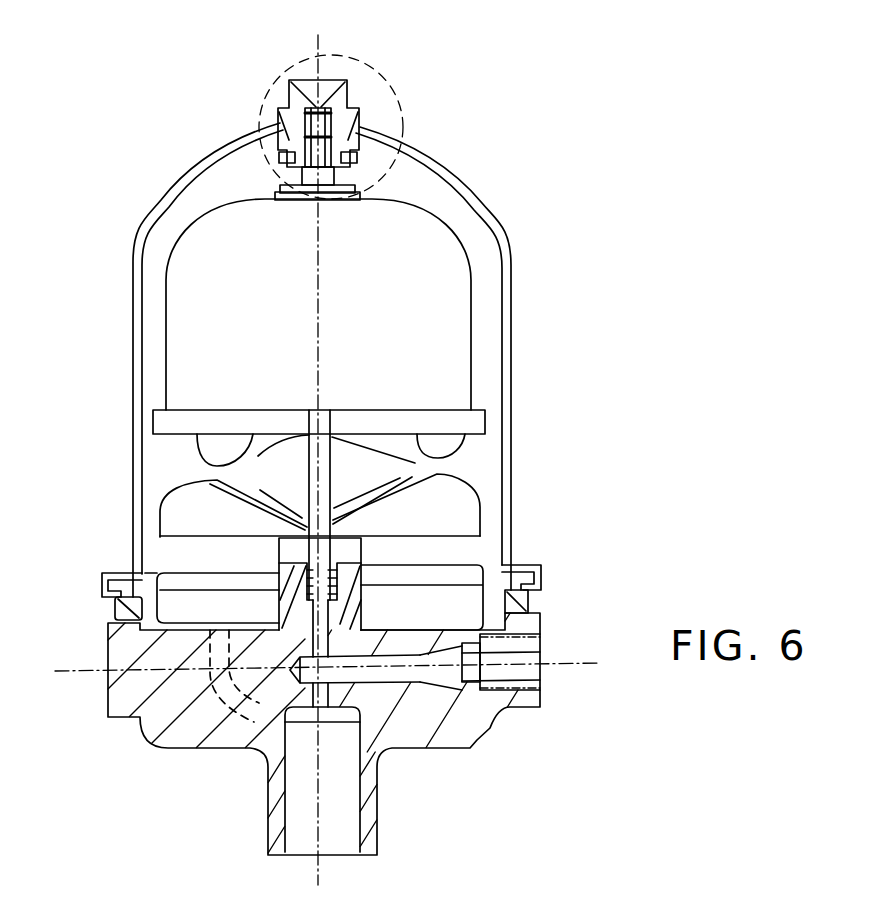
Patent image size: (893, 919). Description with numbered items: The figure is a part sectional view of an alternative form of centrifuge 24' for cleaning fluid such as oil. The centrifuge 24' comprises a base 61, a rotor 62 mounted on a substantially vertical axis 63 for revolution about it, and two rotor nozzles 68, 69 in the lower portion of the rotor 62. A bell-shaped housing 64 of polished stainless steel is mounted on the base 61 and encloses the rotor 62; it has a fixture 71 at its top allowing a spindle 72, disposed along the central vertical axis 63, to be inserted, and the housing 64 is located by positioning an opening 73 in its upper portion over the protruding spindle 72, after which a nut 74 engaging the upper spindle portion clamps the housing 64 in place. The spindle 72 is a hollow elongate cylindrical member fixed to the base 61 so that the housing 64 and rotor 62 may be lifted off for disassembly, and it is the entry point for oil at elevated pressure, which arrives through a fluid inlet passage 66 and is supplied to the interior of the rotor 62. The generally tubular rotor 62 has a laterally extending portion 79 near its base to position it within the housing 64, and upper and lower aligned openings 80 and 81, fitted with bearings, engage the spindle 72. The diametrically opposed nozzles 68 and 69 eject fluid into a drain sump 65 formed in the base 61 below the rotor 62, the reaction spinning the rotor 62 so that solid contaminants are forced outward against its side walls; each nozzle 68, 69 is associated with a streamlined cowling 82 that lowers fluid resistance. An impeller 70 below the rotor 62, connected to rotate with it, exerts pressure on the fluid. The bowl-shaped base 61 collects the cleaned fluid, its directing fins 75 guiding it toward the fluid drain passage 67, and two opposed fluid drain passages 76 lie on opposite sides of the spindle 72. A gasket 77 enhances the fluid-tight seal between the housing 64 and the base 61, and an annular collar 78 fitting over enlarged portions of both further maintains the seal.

The centrifuge 24' is at (379, 258).
The base 61 is at (107, 686).
The rotor 62 is at (222, 313).
The vertical axis 63 is at (318, 278).
The housing 64 is at (162, 188).
The drain sump 65 is at (440, 597).
The fluid inlet passage 66 is at (544, 646).
The fluid drain passage 67 is at (285, 770).
The rotor nozzle 68 is at (223, 447).
The rotor nozzle 69 is at (420, 446).
The impeller 70 is at (473, 492).
The fixture 71 is at (382, 78).
The spindle 72 is at (340, 150).
The opening 73 is at (282, 125).
The nut 74 is at (304, 92).
The directing fins 75 is at (187, 596).
The fluid drain passages 76 is at (173, 752).
The gasket 77 is at (113, 600).
The collar 78 is at (100, 576).
The laterally extending portion 79 is at (480, 417).
The upper opening 80 is at (357, 187).
The lower opening 81 is at (337, 410).
The cowling 82 is at (200, 448).